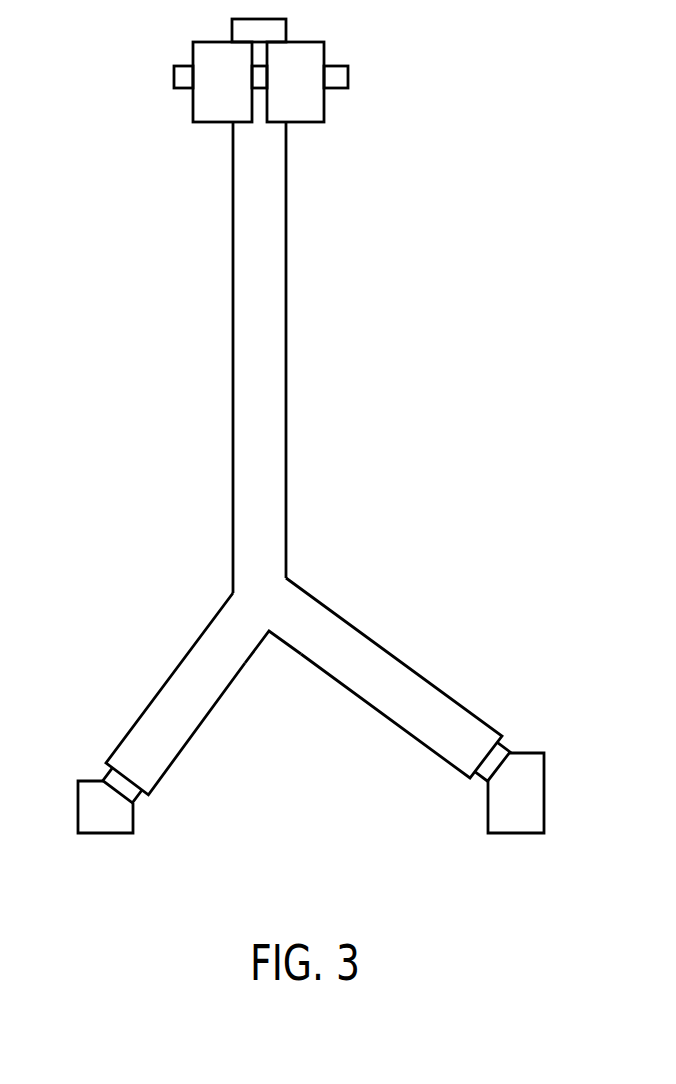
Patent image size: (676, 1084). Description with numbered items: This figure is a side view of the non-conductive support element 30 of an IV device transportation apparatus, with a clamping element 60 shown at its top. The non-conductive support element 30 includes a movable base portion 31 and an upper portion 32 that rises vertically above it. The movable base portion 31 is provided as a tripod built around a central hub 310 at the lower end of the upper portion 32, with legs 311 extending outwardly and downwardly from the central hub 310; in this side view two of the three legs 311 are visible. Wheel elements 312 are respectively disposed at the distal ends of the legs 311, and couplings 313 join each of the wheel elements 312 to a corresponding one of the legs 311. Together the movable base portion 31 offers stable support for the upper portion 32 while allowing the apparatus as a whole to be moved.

The clamping element 60 is at (192, 58).
The non-conductive support element 30 is at (311, 480).
The upper portion 32 is at (252, 325).
The central hub 310 is at (247, 603).
The movable base portion 31 is at (311, 708).
The legs 311 is at (168, 745).
The couplings 313 is at (117, 780).
The wheel elements 312 is at (92, 812).